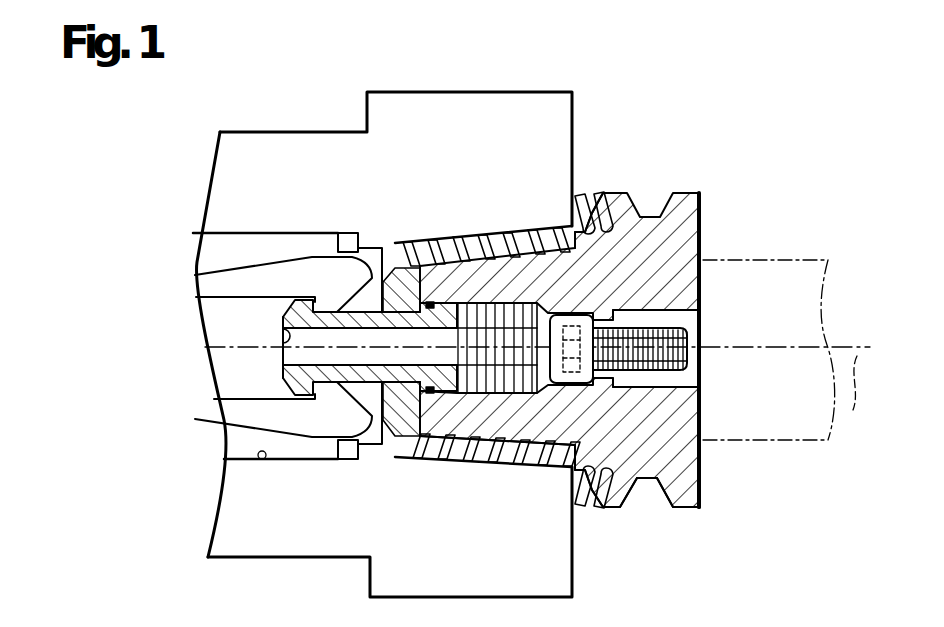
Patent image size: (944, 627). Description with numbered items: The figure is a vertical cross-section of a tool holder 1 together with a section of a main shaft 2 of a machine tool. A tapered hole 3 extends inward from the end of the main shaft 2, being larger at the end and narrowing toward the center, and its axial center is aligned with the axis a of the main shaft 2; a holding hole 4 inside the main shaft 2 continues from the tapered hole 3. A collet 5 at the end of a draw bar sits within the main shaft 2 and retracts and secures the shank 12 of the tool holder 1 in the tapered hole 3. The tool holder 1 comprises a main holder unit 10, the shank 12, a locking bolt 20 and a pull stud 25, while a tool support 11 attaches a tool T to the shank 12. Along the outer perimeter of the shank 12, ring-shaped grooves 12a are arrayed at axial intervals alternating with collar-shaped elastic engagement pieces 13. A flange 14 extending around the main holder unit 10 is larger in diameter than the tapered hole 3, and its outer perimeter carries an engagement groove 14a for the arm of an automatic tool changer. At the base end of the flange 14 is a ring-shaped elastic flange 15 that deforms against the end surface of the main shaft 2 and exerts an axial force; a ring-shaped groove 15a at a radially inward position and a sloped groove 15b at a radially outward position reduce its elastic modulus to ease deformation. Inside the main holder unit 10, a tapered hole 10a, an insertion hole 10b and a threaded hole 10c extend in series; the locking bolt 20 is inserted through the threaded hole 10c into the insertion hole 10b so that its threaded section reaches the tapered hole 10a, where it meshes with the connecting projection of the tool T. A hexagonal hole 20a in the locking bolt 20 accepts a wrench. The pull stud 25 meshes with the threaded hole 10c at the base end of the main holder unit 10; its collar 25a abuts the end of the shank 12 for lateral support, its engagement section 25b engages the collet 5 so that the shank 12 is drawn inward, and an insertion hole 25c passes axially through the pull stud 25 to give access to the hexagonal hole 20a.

The tool holder 1 is at (673, 145).
The main shaft 2 is at (300, 132).
The tapered hole 3 is at (533, 467).
The holding hole 4 is at (262, 459).
The collet 5 is at (305, 238).
The main holder unit 10 is at (703, 191).
The tapered hole 10a is at (663, 313).
The insertion hole 10b is at (609, 325).
The threaded hole 10c is at (497, 303).
The tool support 11 is at (701, 408).
The shank 12 is at (480, 467).
The ring-shaped grooves 12a is at (422, 465).
The elastic engagement pieces 13 is at (433, 237).
The flange 14 is at (688, 508).
The engagement groove 14a is at (650, 480).
The elastic flange 15 is at (583, 187).
The ring-shaped groove 15a is at (568, 220).
The sloped groove 15b is at (613, 190).
The locking bolt 20 is at (698, 338).
The hexagonal hole 20a is at (575, 385).
The pull stud 25 is at (347, 388).
The collar 25a is at (398, 452).
The engagement section 25b is at (298, 400).
The insertion hole 25c is at (283, 337).
The tool T is at (828, 337).
The axis a is at (858, 395).